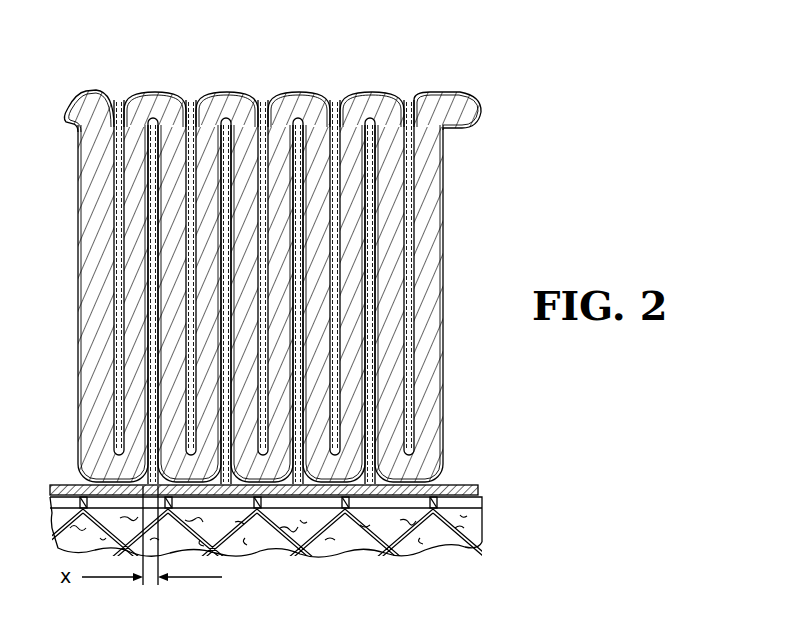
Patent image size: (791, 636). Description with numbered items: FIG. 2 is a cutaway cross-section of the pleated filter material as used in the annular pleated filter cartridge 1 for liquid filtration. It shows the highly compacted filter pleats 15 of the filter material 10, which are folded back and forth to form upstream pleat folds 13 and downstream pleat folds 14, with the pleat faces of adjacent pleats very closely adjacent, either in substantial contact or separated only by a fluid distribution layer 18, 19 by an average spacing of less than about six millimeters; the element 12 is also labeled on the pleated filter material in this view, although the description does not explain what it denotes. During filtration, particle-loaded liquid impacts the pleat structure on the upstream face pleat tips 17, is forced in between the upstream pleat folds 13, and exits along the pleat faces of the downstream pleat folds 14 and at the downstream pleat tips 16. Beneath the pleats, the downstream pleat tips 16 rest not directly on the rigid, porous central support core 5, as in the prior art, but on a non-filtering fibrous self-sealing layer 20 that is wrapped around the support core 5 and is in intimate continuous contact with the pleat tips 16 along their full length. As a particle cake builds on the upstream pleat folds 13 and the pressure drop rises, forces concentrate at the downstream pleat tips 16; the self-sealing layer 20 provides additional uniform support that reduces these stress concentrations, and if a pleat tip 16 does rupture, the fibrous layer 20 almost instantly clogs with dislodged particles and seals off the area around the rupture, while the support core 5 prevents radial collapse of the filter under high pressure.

The pleated filter cartridge 1 is at (562, 48).
The central support core 5 is at (483, 503).
The filter material 10 is at (203, 88).
The sheet wall 12 is at (245, 117).
The upstream pleat folds 13 is at (360, 88).
The downstream pleat folds 14 is at (376, 129).
The filter pleats 15 is at (289, 92).
The downstream pleat tips 16 is at (374, 470).
The upstream face pleat tips 17 is at (137, 90).
The fluid distribution layer 18 is at (477, 97).
The fluid distribution layer 19 is at (445, 180).
The self-sealing layer 20 is at (457, 487).